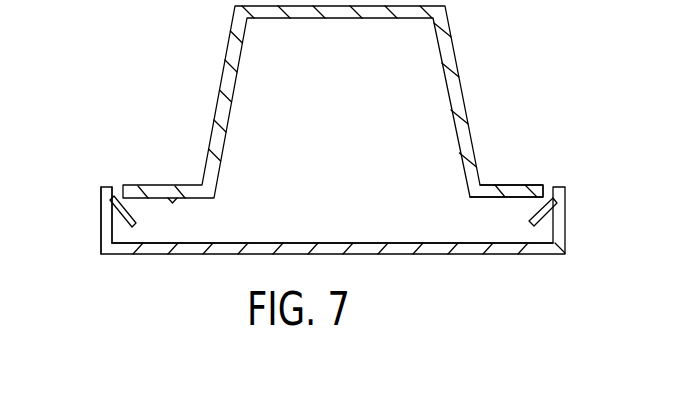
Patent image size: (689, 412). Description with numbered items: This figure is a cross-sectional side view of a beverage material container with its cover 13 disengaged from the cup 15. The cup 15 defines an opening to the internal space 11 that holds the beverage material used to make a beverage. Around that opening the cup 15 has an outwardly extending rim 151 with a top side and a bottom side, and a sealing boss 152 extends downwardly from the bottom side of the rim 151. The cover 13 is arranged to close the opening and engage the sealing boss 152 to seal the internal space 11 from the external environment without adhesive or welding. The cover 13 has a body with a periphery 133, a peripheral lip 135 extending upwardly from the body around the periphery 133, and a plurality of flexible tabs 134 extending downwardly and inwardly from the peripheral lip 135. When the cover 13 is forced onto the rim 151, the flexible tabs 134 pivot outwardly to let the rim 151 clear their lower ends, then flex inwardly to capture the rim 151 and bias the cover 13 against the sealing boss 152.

The internal space 11 is at (410, 140).
The cup 15 is at (450, 56).
The rim 151 is at (515, 185).
The sealing boss 152 is at (507, 185).
The cover 13 is at (508, 250).
The periphery 133 is at (101, 249).
The peripheral lip 135 is at (107, 212).
The flexible tabs 134 is at (113, 199).